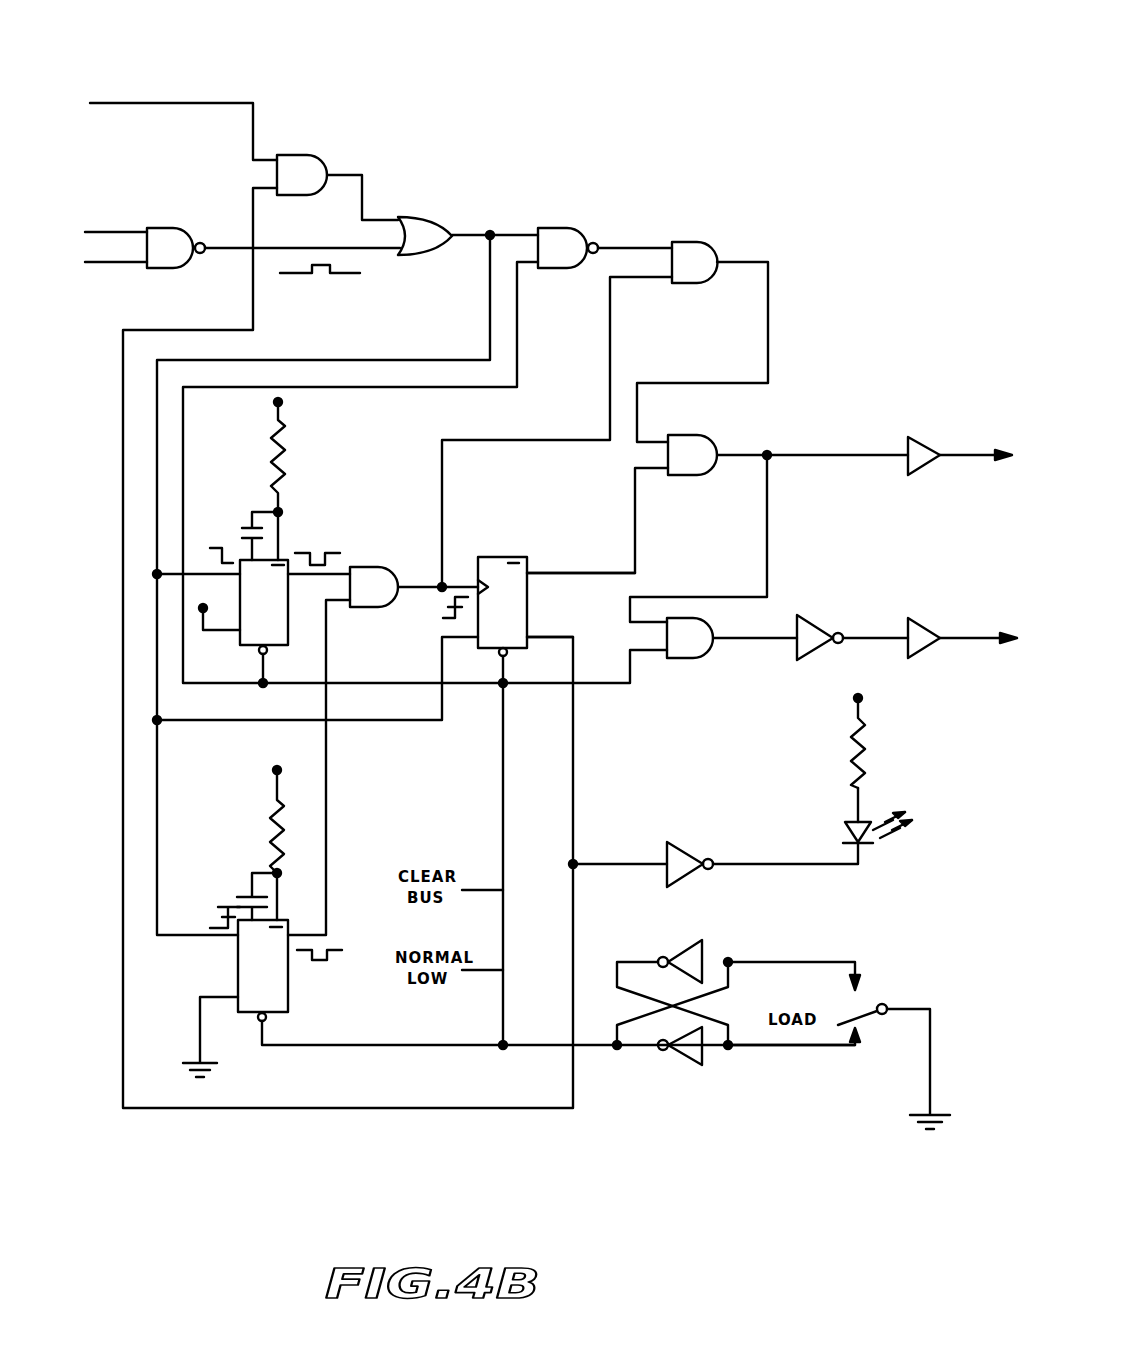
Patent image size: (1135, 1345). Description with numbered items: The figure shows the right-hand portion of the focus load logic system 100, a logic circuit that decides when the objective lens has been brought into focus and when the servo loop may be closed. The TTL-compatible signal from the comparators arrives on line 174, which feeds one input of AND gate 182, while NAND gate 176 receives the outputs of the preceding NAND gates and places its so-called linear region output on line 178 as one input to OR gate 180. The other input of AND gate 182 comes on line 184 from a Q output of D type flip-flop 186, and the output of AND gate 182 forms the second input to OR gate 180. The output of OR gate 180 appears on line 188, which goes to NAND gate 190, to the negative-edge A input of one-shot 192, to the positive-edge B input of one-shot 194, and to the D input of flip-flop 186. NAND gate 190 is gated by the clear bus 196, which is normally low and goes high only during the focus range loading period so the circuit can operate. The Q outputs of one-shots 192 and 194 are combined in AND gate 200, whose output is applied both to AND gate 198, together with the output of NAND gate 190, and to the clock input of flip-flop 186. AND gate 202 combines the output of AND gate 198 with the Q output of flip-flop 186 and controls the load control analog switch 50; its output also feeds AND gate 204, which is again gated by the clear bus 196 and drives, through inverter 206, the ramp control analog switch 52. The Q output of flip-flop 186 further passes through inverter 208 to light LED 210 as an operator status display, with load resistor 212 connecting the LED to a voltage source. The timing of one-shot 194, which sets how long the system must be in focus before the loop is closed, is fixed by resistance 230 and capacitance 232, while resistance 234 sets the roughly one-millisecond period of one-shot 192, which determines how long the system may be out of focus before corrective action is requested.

The circuit 100 is at (740, 98).
The line 174 is at (190, 103).
The NAND gate 176 is at (173, 228).
The line 178 is at (338, 245).
The OR gate 180 is at (418, 215).
The AND gate 182 is at (310, 153).
The line 184 is at (150, 1112).
The D type flip-flop 186 is at (530, 606).
The line 188 is at (470, 228).
The NAND gate 190 is at (580, 228).
The one-shot 192 is at (290, 645).
The one-shot 194 is at (238, 968).
The clear bus 196 is at (517, 357).
The AND gate 198 is at (705, 242).
The AND gate 200 is at (405, 545).
The AND gate 202 is at (718, 420).
The AND gate 204 is at (686, 658).
The inverter 206 is at (808, 660).
The inverter 208 is at (688, 845).
The LED 210 is at (845, 828).
The load resistor 212 is at (850, 748).
The resistance 230 is at (272, 818).
The capacitance 232 is at (240, 887).
The resistance 234 is at (285, 470).
The analog switch 50 is at (908, 437).
The analog switch 52 is at (908, 620).